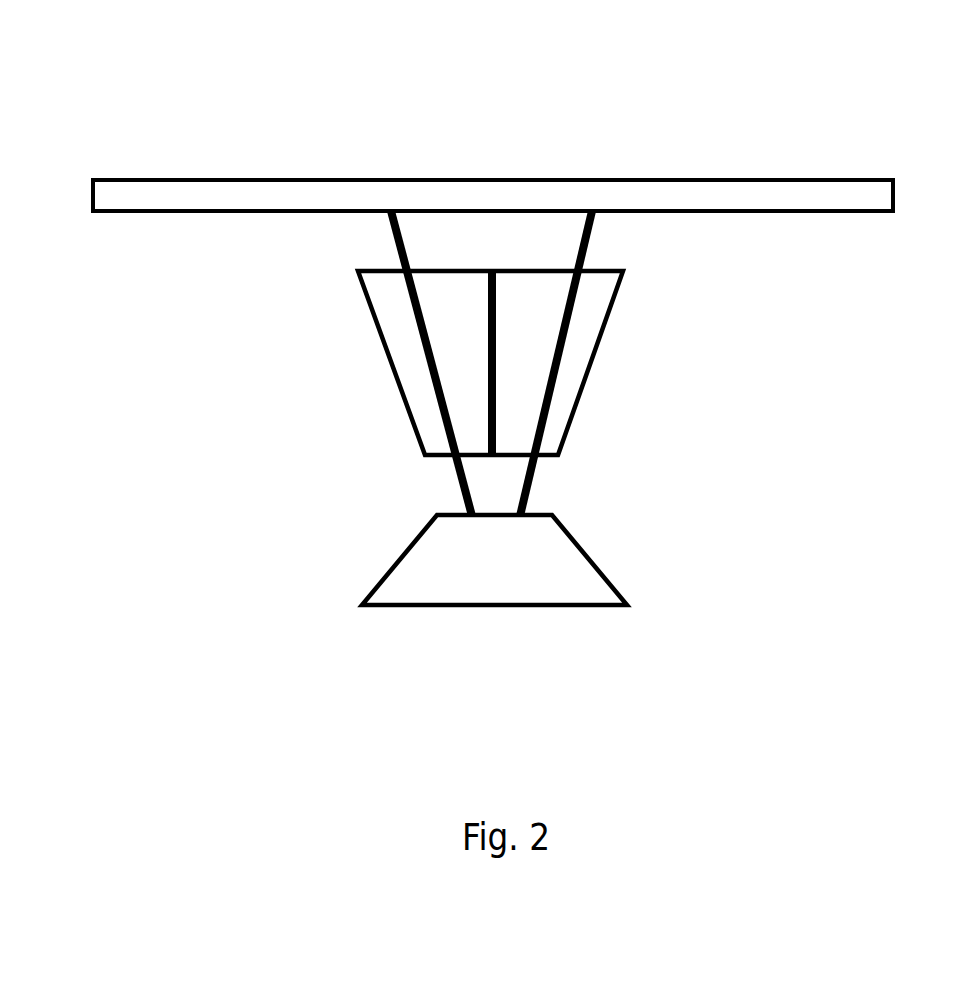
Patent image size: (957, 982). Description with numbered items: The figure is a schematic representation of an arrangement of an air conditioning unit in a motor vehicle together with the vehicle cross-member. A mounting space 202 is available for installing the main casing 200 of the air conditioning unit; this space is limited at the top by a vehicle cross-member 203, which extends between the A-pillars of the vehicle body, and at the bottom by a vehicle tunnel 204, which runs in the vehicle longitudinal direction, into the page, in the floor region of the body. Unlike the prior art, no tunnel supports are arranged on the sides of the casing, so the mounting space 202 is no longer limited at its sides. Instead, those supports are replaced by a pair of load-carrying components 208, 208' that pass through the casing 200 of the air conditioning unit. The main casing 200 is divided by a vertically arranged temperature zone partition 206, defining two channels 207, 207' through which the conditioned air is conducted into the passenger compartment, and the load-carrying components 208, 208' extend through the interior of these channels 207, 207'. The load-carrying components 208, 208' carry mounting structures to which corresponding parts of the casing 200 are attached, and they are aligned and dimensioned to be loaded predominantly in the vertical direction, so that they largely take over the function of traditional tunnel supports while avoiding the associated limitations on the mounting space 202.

The main casing 200 is at (474, 396).
The mounting space 202 is at (418, 242).
The vehicle cross-member 203 is at (682, 180).
The vehicle tunnel 204 is at (592, 560).
The temperature zone partition 206 is at (488, 424).
The channel 207 is at (693, 363).
The channel 207' is at (272, 363).
The load-carrying component 208 is at (710, 363).
The load-carrying component 208' is at (305, 363).